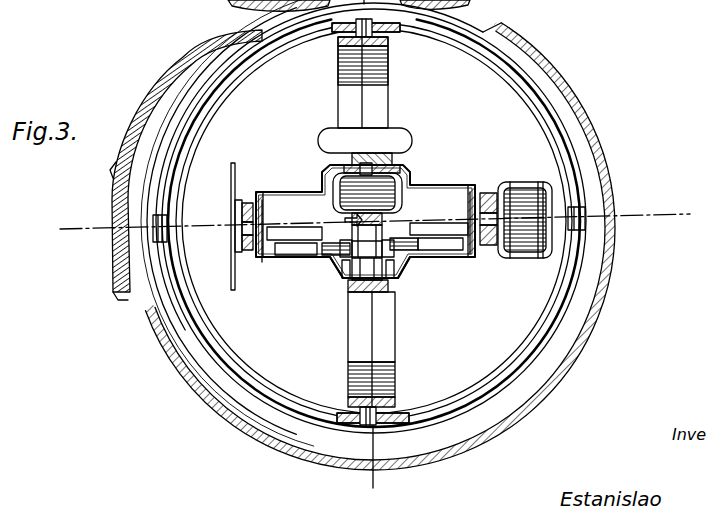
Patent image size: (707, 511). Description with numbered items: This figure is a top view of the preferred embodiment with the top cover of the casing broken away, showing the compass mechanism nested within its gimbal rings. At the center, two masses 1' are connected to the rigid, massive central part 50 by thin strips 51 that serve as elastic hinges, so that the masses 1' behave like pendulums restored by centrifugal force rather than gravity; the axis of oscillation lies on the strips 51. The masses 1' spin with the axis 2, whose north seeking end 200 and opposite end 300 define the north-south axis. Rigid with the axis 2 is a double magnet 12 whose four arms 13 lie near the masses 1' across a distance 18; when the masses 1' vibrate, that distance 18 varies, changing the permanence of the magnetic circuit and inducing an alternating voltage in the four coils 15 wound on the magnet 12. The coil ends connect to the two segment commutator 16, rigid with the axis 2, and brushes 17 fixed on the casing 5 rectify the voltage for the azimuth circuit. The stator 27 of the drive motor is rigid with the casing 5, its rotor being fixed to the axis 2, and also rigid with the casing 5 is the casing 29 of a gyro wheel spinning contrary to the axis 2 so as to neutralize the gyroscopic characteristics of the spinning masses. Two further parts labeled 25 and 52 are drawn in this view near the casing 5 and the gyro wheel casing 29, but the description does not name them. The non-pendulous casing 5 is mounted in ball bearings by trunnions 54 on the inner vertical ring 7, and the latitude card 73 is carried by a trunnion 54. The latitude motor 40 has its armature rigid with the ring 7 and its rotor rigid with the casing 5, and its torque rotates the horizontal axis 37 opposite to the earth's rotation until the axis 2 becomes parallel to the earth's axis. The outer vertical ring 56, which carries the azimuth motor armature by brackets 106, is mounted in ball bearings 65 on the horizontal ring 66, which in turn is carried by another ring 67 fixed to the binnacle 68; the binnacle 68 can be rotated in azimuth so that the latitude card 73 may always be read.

The masses 1' is at (368, 204).
The axis 2 is at (352, 230).
The casing 5 is at (299, 192).
The vertical ring 7 is at (240, 208).
The double magnet 12 is at (402, 268).
The arms 13 is at (305, 258).
The coils 15 is at (340, 262).
The two segment commutator 16 is at (384, 275).
The brushes 17 is at (344, 270).
The distance 18 is at (272, 258).
The guide wall 25 is at (338, 282).
The stator 27 is at (412, 176).
The casing of a gyro wheel 29 is at (368, 128).
The horizontal axis 37 is at (93, 232).
The latitude motor 40 is at (522, 183).
The central part 50 is at (362, 220).
The thin strips 51 is at (463, 225).
The collar nut 52 is at (394, 158).
The trunnions 54 is at (243, 228).
The outer vertical ring 56 is at (386, 90).
The ball bearings 65 is at (346, 34).
The horizontal ring 66 is at (238, 80).
The ring 67 is at (205, 356).
The binnacle 68 is at (600, 166).
The latitude card 73 is at (233, 280).
The brackets 106 is at (355, 103).
The north seeking end 200 is at (372, 158).
The south end of the north-south axis 300 is at (364, 292).